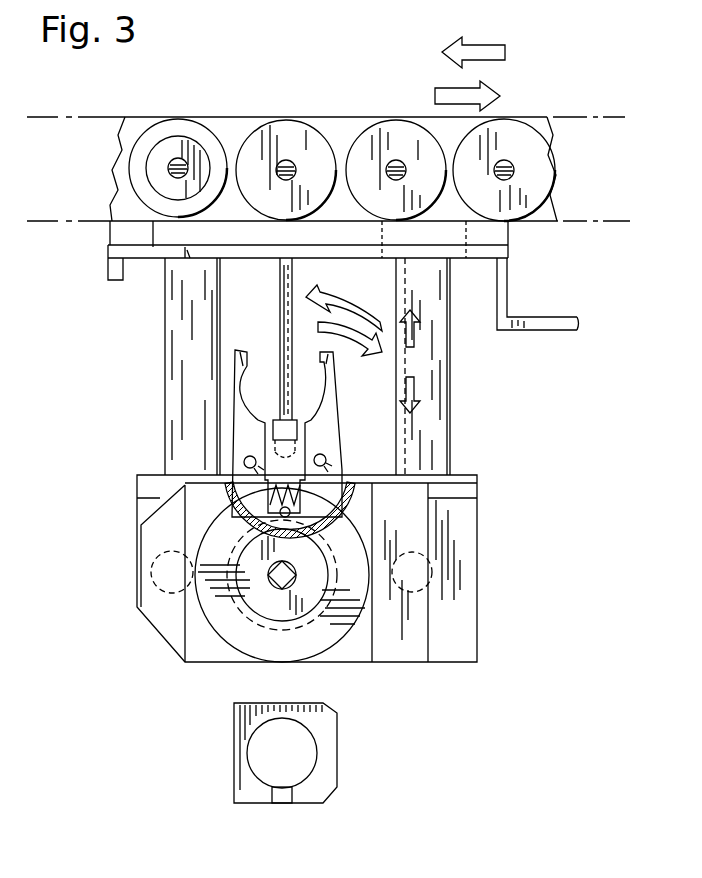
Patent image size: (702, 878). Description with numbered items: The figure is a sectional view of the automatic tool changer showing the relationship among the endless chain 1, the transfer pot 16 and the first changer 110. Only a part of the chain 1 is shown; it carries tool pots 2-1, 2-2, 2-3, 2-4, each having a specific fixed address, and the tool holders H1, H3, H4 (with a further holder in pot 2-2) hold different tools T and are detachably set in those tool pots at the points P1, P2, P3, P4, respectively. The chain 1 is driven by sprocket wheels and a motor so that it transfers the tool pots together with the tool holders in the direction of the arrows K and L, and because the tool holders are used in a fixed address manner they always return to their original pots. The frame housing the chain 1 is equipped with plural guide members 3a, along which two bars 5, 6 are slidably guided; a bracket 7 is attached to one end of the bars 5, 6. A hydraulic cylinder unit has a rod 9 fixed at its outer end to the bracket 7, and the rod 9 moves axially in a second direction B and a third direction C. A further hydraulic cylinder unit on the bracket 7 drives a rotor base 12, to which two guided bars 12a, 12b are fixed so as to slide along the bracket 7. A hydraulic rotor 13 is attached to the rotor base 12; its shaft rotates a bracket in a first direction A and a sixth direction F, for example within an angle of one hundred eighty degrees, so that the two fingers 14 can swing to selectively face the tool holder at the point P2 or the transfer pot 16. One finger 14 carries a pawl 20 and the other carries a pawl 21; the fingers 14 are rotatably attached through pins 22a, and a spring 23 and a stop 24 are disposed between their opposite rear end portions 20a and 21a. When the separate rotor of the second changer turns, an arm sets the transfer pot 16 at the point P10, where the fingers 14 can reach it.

The endless type chain 1 is at (523, 108).
The tool pot 2-1 is at (154, 131).
The tool pot 2-2 is at (262, 121).
The tool pot 2-3 is at (362, 140).
The tool pot 2-4 is at (557, 158).
The tool holder H1 is at (201, 135).
The tool holder H3 is at (371, 140).
The tool holder H4 is at (543, 214).
The tool T is at (170, 164).
The guide member 3a is at (152, 228).
The point P1 is at (156, 228).
The point P2 is at (302, 223).
The point P3 is at (406, 223).
The point P4 is at (530, 226).
The arrow L is at (492, 47).
The arrow K is at (444, 81).
The bar 5 is at (170, 425).
The bar 6 is at (447, 413).
The first changer 110 is at (467, 430).
The rod 9 is at (283, 285).
The sixth direction F is at (351, 285).
The first direction A is at (320, 338).
The second direction B is at (416, 338).
The third direction C is at (414, 381).
The finger 14 is at (267, 422).
The pawl 20 is at (237, 354).
The pawl 21 is at (334, 364).
The pin 22a is at (244, 461).
The spring 23 is at (297, 500).
The stop 24 is at (287, 519).
The rear end portion 20a is at (220, 512).
The rear end portion 21a is at (362, 504).
The bracket 7 is at (472, 485).
The rotor base 12 is at (400, 655).
The guided bar 12a is at (151, 577).
The guided bar 12b is at (428, 583).
The hydraulic rotor 13 is at (308, 652).
The transfer pot 16 is at (338, 790).
The point P10 is at (315, 813).